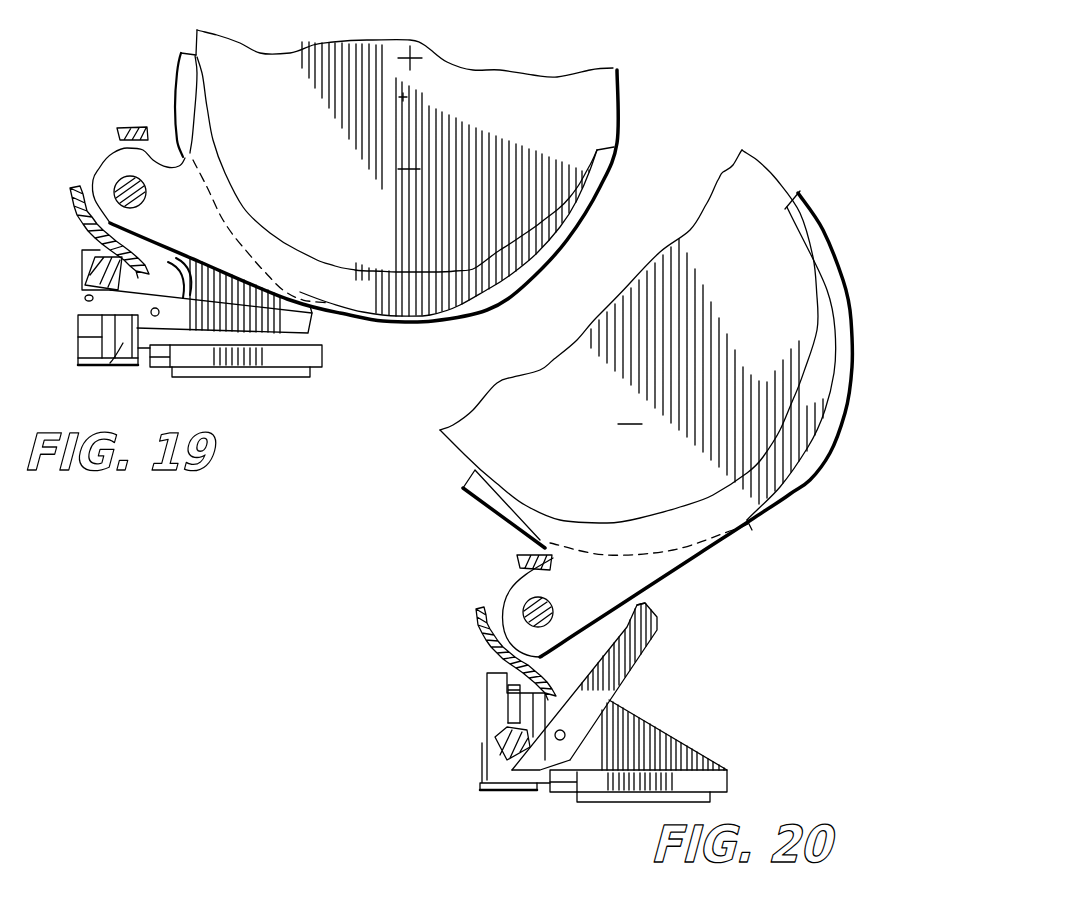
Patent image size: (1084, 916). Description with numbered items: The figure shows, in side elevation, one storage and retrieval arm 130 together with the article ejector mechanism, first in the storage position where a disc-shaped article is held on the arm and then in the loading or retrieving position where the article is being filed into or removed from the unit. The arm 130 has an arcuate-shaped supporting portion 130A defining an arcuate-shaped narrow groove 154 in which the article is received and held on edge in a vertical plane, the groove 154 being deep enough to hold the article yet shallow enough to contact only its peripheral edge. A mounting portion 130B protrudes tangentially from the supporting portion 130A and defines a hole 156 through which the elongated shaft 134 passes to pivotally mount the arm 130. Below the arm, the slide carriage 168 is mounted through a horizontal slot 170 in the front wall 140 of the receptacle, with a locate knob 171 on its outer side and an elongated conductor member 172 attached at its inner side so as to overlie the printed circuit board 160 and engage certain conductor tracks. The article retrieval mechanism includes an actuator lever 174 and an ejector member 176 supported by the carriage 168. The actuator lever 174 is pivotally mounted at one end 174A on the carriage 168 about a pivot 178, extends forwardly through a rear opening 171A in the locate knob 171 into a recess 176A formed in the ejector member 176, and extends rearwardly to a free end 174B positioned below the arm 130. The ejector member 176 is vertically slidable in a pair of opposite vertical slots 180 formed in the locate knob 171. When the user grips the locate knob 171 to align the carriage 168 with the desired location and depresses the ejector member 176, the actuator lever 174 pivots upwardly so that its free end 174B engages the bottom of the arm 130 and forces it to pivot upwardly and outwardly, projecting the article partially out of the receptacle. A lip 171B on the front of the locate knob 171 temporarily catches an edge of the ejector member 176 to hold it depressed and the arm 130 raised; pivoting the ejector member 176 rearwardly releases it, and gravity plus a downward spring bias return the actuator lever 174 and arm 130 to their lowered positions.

In FIG. 19, the storage and retrieval arm 130 is at (482, 255).
In FIG. 20, the storage and retrieval arm 130 is at (687, 503).
In FIG. 19, the arcuate-shaped supporting portion 130A is at (507, 268).
In FIG. 20, the arcuate-shaped supporting portion 130A is at (778, 478).
In FIG. 19, the mounting portion 130B is at (190, 180).
In FIG. 20, the mounting portion 130B is at (622, 592).
In FIG. 19, the elongated shaft 134 is at (117, 187).
In FIG. 20, the elongated shaft 134 is at (523, 605).
In FIG. 19, the front wall 140 is at (73, 194).
In FIG. 20, the front wall 140 is at (478, 610).
In FIG. 19, the arcuate-shaped narrow groove 154 is at (280, 221).
In FIG. 20, the arcuate-shaped narrow groove 154 is at (606, 548).
In FIG. 19, the hole 156 is at (140, 202).
In FIG. 20, the hole 156 is at (548, 620).
In FIG. 19, the printed circuit board 160 is at (253, 375).
In FIG. 20, the printed circuit board 160 is at (695, 802).
In FIG. 19, the slide carriage 168 is at (162, 353).
In FIG. 20, the slide carriage 168 is at (572, 795).
In FIG. 19, the horizontal slot 170 is at (170, 263).
In FIG. 19, the locate knob 171 is at (82, 258).
In FIG. 20, the locate knob 171 is at (487, 677).
In FIG. 19, the rear opening 171A is at (145, 348).
In FIG. 20, the rear opening 171A is at (545, 785).
In FIG. 19, the lip 171B is at (100, 312).
In FIG. 20, the lip 171B is at (487, 740).
In FIG. 19, the elongated conductor member 172 is at (320, 357).
In FIG. 20, the elongated conductor member 172 is at (725, 775).
In FIG. 19, the actuator lever 174 is at (297, 305).
In FIG. 20, the actuator lever 174 is at (610, 706).
In FIG. 19, the one end of actuator lever 174A is at (123, 345).
In FIG. 20, the one end of actuator lever 174A is at (572, 775).
In FIG. 19, the free end of actuator lever 174B is at (320, 330).
In FIG. 20, the free end of actuator lever 174B is at (663, 628).
In FIG. 19, the ejector member 176 is at (83, 265).
In FIG. 20, the ejector member 176 is at (482, 760).
In FIG. 19, the recess 176A is at (85, 298).
In FIG. 20, the recess 176A is at (500, 784).
In FIG. 19, the pivot 178 is at (160, 313).
In FIG. 20, the pivot 178 is at (568, 736).
In FIG. 19, the vertical slots 180 is at (93, 337).
In FIG. 20, the vertical slots 180 is at (510, 697).